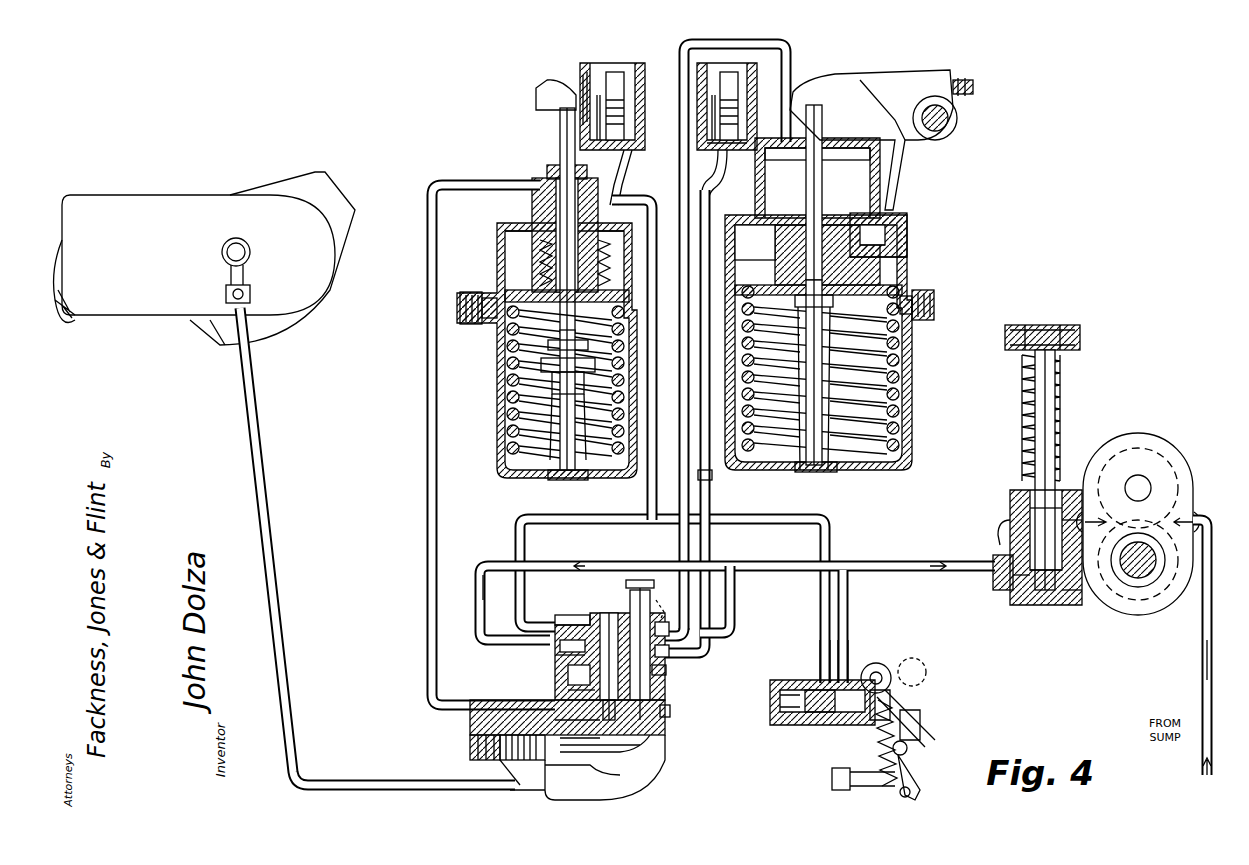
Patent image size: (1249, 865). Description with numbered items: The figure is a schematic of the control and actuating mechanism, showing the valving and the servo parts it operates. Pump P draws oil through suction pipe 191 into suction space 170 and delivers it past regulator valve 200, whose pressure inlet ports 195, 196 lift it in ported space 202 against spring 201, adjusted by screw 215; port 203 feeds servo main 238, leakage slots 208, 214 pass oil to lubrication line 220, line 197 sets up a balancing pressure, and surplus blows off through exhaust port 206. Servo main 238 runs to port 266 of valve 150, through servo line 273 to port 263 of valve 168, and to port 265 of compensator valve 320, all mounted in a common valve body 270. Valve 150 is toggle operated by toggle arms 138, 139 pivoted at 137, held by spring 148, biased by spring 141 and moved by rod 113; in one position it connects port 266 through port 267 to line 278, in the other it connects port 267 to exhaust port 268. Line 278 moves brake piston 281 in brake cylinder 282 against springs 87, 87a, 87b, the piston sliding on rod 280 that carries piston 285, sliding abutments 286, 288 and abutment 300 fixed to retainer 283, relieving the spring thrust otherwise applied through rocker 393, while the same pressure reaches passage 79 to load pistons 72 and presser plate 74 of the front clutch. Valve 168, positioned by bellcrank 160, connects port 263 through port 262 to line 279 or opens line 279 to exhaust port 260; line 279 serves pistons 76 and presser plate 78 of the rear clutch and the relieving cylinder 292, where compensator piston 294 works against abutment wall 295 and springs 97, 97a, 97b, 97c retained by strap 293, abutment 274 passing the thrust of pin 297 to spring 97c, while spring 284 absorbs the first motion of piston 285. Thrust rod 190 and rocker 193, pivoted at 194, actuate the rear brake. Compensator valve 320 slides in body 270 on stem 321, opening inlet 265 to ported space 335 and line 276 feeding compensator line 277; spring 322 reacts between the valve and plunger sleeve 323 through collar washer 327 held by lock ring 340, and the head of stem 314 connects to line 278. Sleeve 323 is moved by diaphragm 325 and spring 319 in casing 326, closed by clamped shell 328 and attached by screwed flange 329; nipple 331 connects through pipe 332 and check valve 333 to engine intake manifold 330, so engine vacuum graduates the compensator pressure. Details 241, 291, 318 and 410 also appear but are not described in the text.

The pistons 72 is at (615, 80).
The presser plate 74 is at (590, 68).
The pistons 76 is at (728, 96).
The presser plate 78 is at (742, 84).
The drilled passage 79 is at (640, 125).
The springs 87 is at (497, 285).
The springs 87a is at (505, 350).
The springs 87b is at (510, 395).
The springs 97 is at (912, 272).
The servo spring 97a is at (900, 340).
The servo spring 97b is at (895, 366).
The spring 97c is at (895, 400).
The rod 113 is at (830, 777).
The pivot 137 is at (908, 747).
The toggle arm 138 is at (922, 700).
The toggle arm 139 is at (907, 792).
The spring 141 is at (870, 790).
The spring 148 is at (922, 722).
The valve 150 is at (845, 718).
The bellcrank 160 is at (656, 600).
The valve 168 is at (632, 600).
The suction space 170 is at (1195, 510).
The thrust rod 190 is at (972, 88).
The pipe 191 is at (1202, 655).
The rocker 193 is at (880, 75).
The pivot 194 is at (957, 118).
The pressure inlet port 195 is at (1095, 500).
The pressure inlet port 196 is at (1070, 595).
The line 197 is at (1052, 490).
The regulator valve 200 is at (1015, 498).
The spring 201 is at (1065, 380).
The ported space 202 is at (1040, 603).
The port 203 is at (1010, 585).
The exhaust port 206 is at (1020, 508).
The leakage slot 208 is at (1020, 592).
The leakage slot 214 is at (1052, 606).
The screw 215 is at (1052, 332).
The lubrication line 220 is at (1003, 535).
The servo main 238 is at (920, 563).
The pump shaft 241 is at (1140, 570).
The exhaust port 260 is at (662, 668).
The port 262 is at (672, 650).
The port 263 is at (676, 632).
The ported passage 265 is at (560, 652).
The port 266 is at (845, 683).
The port 267 is at (818, 683).
The exhaust port 268 is at (805, 728).
The valve body 270 is at (592, 614).
The servo line 273 is at (555, 563).
The abutment 274 is at (780, 280).
The line 276 is at (668, 712).
The compensator line 277 is at (680, 75).
The line 278 is at (647, 487).
The line 279 is at (712, 488).
The rod 280 is at (560, 120).
The brake piston 281 is at (545, 256).
The brake cylinder 282 is at (500, 228).
The retainer 283 is at (497, 440).
The spring 284 is at (543, 245).
The piston 285 is at (545, 210).
The sliding abutment 286 is at (500, 374).
The sliding abutment 288 is at (505, 420).
The passage 291 is at (900, 238).
The cylinder 292 is at (908, 256).
The strap 293 is at (910, 448).
The compensator piston 294 is at (860, 185).
The abutment wall 295 is at (872, 213).
The pin 297 is at (882, 230).
The abutment 300 is at (548, 478).
The stem 314 is at (600, 608).
The valve cap 318 is at (560, 615).
The spring 319 is at (605, 800).
The compensator valve 320 is at (570, 675).
The stem 321 is at (575, 692).
The spring 322 is at (605, 732).
The plunger sleeve 323 is at (590, 764).
The diaphragm 325 is at (515, 765).
The casing 326 is at (475, 716).
The collar washer 327 is at (560, 726).
The clamped shell 328 is at (500, 778).
The screwed flange 329 is at (470, 748).
The engine intake manifold 330 is at (185, 195).
The nipple 331 is at (520, 792).
The pipe 332 is at (262, 400).
The check valve 333 is at (252, 292).
The ported space 335 is at (558, 660).
The lock ring 340 is at (575, 740).
The rocker 393 is at (546, 93).
The fitting 410 is at (714, 475).
The pump assembly P is at (1150, 445).